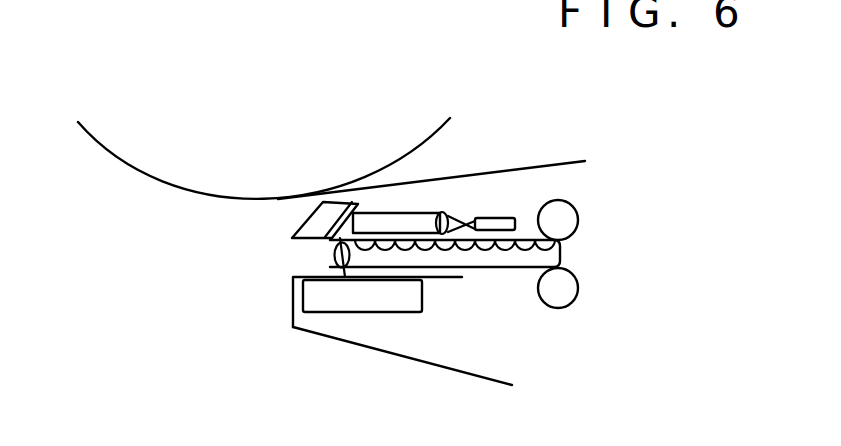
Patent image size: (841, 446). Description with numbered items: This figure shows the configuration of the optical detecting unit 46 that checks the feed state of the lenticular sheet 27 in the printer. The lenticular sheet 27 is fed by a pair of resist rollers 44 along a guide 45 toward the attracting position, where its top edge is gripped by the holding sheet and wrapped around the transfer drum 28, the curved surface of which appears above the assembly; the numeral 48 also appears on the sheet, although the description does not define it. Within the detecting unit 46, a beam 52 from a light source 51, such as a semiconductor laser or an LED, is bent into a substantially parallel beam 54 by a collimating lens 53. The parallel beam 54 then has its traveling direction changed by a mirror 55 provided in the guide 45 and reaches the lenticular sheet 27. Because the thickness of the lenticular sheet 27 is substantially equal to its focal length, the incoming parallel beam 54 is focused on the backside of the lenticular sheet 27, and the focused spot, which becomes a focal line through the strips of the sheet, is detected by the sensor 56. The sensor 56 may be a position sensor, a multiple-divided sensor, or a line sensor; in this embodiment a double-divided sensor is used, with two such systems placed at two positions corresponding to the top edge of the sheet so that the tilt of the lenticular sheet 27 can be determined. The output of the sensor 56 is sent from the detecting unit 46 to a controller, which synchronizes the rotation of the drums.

The lenticular sheet 27 is at (562, 255).
The transfer drum 28 is at (370, 175).
The resist rollers 44 is at (578, 218).
The guide 45 is at (583, 162).
The detecting unit 46 is at (137, 298).
The transfer unit 48 is at (437, 12).
The light source 51 is at (503, 218).
The beam 52 is at (464, 221).
The collimating lens 53 is at (443, 212).
The parallel beam 54 is at (405, 213).
The mirror 55 is at (325, 240).
The sensor 56 is at (425, 302).